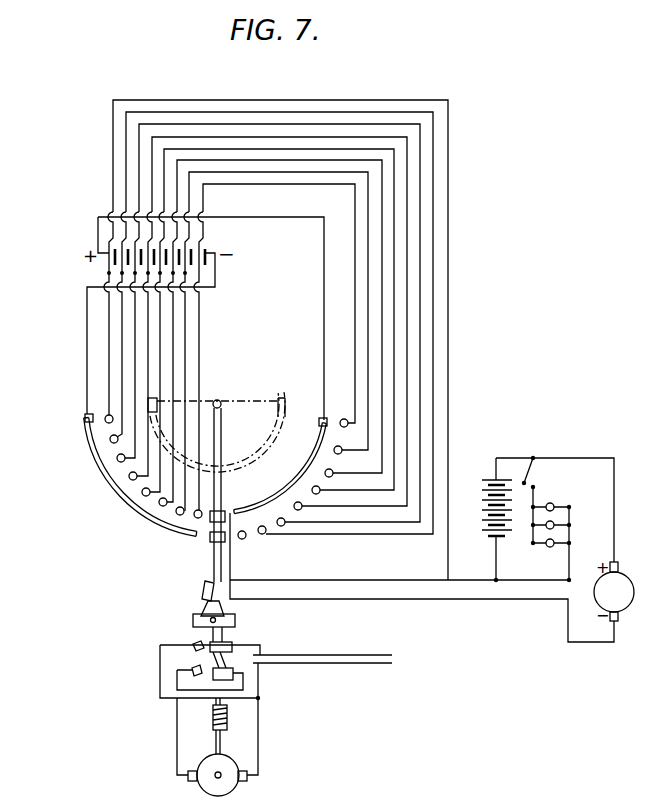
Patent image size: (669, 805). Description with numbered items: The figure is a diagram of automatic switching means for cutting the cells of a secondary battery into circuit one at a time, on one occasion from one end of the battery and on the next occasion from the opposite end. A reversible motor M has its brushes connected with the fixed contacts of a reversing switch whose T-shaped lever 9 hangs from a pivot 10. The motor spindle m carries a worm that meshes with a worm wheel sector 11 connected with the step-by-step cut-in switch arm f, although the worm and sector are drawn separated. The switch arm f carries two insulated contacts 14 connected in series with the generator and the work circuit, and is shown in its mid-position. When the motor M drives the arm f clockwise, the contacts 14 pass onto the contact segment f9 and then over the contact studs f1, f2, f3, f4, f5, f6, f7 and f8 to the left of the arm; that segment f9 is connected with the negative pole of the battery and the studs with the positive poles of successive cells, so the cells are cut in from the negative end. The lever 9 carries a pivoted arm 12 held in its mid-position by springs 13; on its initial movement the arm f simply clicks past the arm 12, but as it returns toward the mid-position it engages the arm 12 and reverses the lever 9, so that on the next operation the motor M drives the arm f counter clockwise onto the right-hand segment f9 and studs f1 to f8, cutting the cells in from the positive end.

The step-by-step cut-in switch arm f is at (229, 398).
The contact stud f1 is at (194, 517).
The contact stud f2 is at (177, 513).
The contact stud f3 is at (159, 504).
The contact stud f4 is at (142, 494).
The contact stud f5 is at (129, 478).
The contact stud f6 is at (117, 460).
The contact stud f7 is at (110, 441).
The contact stud f8 is at (103, 421).
The contact segment f9 is at (190, 535).
The reversing switch lever 9 is at (212, 643).
The pivot 10 is at (226, 637).
The worm wheel sector 11 is at (188, 394).
The pivoted arm 12 is at (203, 590).
The springs 13 is at (200, 612).
The insulated contacts 14 is at (210, 536).
The motor spindle m is at (222, 738).
The reversible motor M is at (238, 788).